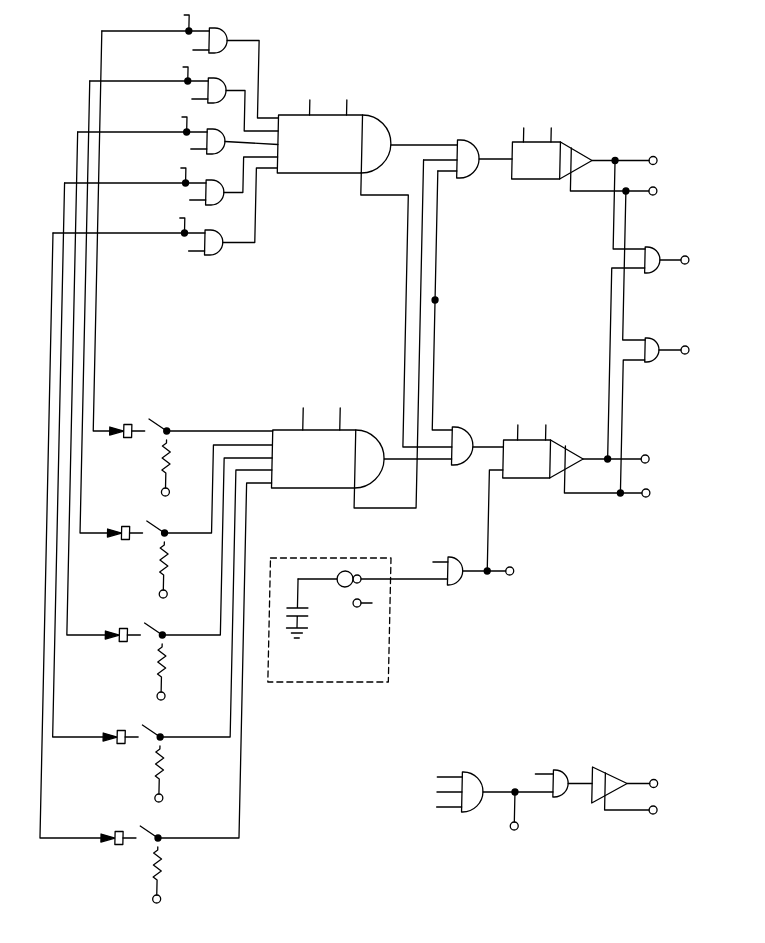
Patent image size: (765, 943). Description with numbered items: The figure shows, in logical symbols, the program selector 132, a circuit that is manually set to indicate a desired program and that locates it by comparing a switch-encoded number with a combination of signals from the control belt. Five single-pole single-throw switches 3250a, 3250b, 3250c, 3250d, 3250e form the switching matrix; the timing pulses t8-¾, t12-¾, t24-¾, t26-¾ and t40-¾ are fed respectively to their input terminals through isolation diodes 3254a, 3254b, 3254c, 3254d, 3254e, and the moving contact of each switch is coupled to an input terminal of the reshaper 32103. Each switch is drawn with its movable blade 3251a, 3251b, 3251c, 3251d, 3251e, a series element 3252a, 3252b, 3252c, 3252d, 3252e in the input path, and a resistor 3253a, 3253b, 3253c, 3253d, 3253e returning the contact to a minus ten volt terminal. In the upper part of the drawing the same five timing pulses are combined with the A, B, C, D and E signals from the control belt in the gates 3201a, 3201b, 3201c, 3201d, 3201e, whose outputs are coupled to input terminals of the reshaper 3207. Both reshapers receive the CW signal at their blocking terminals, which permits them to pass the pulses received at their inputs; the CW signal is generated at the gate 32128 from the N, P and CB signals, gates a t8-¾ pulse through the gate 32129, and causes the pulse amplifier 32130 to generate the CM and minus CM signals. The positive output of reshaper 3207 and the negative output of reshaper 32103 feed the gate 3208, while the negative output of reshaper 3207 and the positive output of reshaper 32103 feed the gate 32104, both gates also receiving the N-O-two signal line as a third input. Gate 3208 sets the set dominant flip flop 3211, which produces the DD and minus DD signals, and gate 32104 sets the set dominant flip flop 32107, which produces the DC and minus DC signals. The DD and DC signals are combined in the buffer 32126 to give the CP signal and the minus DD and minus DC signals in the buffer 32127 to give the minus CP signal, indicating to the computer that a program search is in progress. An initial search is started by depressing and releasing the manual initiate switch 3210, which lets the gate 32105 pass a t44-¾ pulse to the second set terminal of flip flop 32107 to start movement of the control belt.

The program selector 132 is at (539, 891).
The gate 3201a is at (232, 24).
The gate 3201b is at (234, 74).
The gate 3201c is at (230, 124).
The gate 3201d is at (228, 174).
The gate 3201e is at (232, 225).
The reshaper 3207 is at (335, 154).
The gate 3208 is at (468, 147).
The set dominant flip flop 3211 is at (553, 162).
The buffer 32126 is at (650, 247).
The buffer 32127 is at (652, 338).
The reshaper 32103 is at (363, 438).
The gate 32104 is at (464, 427).
The set dominant flip flop 32107 is at (589, 455).
The gate 32105 is at (455, 558).
The switch 3210 is at (289, 558).
The single-pole single-throw switch 3250a is at (178, 451).
The single-pole single-throw switch 3250b is at (177, 523).
The single-pole single-throw switch 3250c is at (176, 581).
The single-pole single-throw switch 3250d is at (173, 638).
The single-pole single-throw switch 3250e is at (167, 702).
The switch blade 3251a is at (168, 436).
The switch blade 3251b is at (168, 538).
The switch blade 3251c is at (168, 640).
The switch blade 3251d is at (168, 742).
The switch blade 3251e is at (168, 843).
The diode 3252a is at (152, 435).
The diode 3252b is at (152, 537).
The diode 3252c is at (152, 639).
The diode 3252d is at (152, 741).
The diode 3252e is at (152, 842).
The resistor 3253a is at (181, 455).
The resistor 3253b is at (181, 557).
The resistor 3253c is at (181, 660).
The resistor 3253d is at (181, 761).
The resistor 3253e is at (181, 866).
The isolation diode 3254a is at (123, 428).
The isolation diode 3254b is at (123, 530).
The isolation diode 3254c is at (123, 632).
The isolation diode 3254d is at (123, 734).
The isolation diode 3254e is at (123, 835).
The gate 32128 is at (476, 764).
The gate 32129 is at (575, 771).
The pulse amplifier 32130 is at (612, 770).